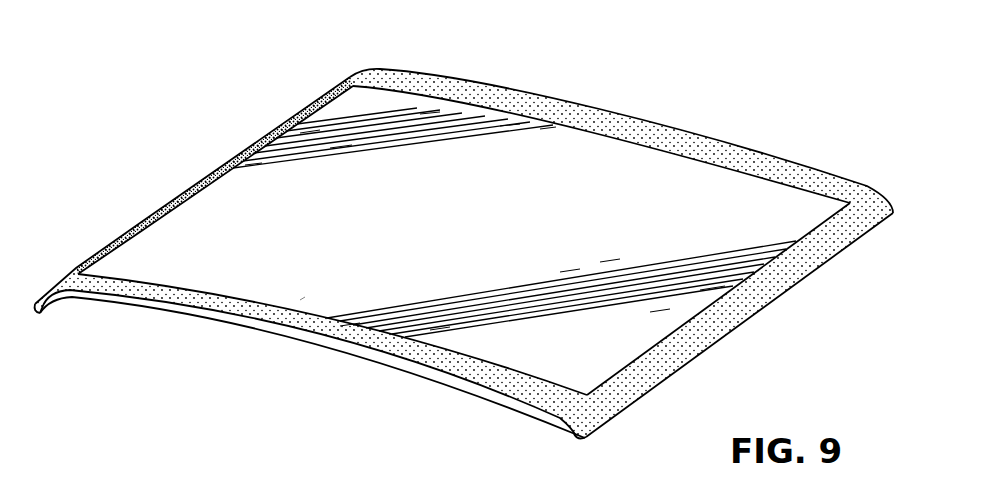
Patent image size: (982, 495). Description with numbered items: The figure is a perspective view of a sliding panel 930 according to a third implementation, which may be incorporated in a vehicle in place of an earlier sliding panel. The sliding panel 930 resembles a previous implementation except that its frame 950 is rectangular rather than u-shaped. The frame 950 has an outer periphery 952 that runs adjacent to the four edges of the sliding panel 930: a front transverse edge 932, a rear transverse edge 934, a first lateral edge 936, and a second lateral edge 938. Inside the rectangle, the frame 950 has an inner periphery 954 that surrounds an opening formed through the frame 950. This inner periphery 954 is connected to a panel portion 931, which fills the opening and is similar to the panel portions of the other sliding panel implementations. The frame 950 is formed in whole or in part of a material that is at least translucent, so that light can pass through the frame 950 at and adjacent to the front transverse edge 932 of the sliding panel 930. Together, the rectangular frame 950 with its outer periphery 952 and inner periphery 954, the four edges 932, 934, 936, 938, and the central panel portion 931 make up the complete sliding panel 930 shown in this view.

The sliding panel 930 is at (224, 106).
The panel portion 931 is at (302, 295).
The front transverse edge 932 is at (452, 382).
The rear transverse edge 934 is at (630, 118).
The first lateral edge 936 is at (733, 323).
The second lateral edge 938 is at (203, 175).
The frame 950 is at (72, 272).
The outer periphery 952 is at (523, 400).
The inner periphery 954 is at (448, 352).